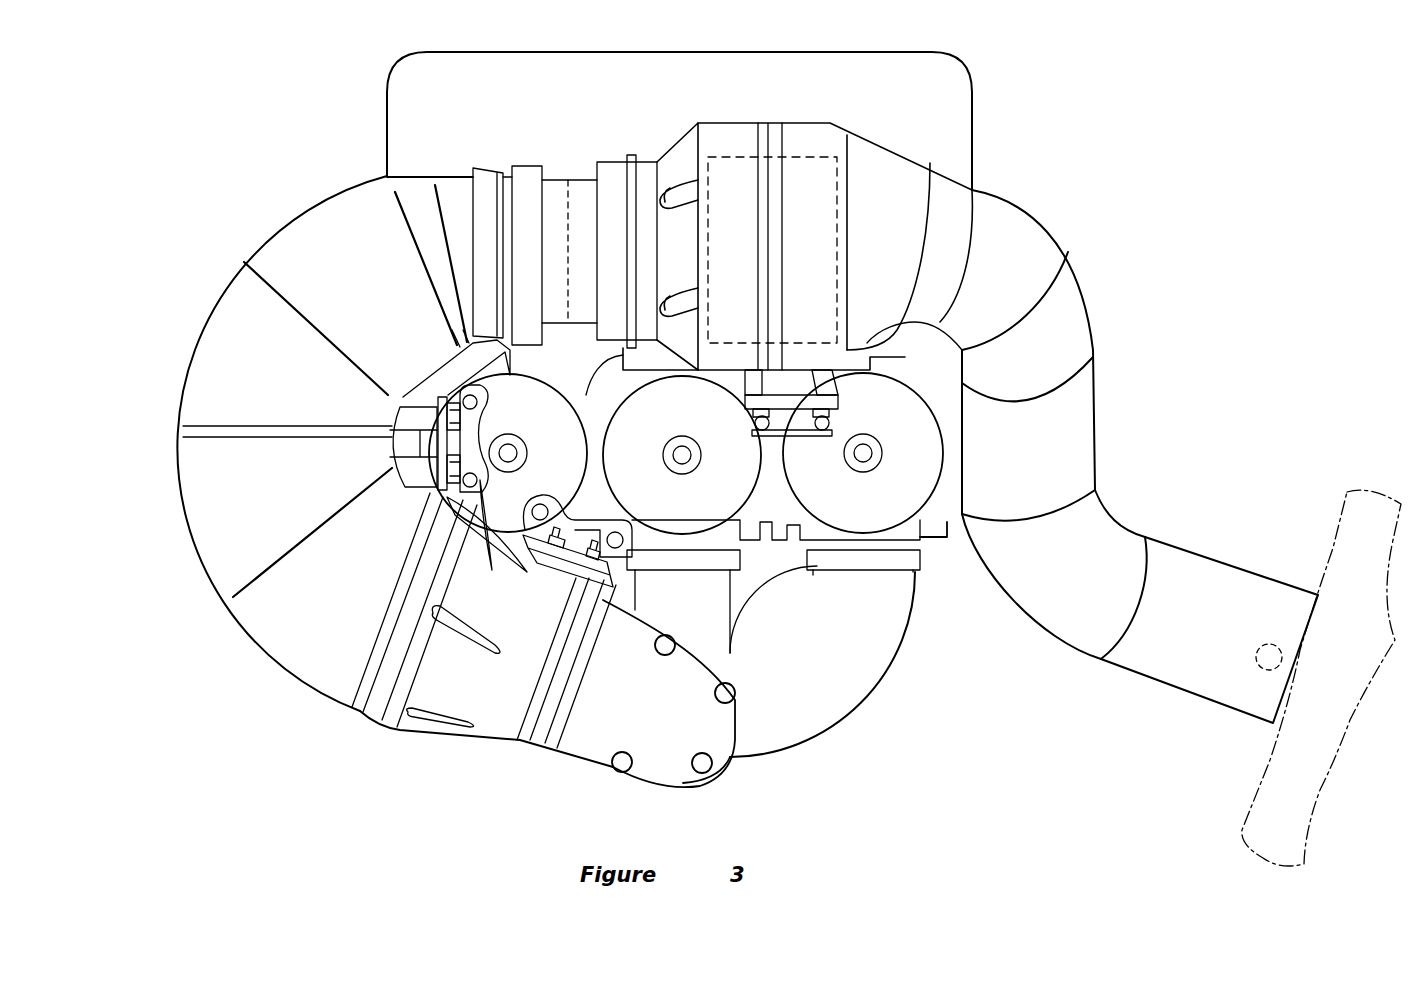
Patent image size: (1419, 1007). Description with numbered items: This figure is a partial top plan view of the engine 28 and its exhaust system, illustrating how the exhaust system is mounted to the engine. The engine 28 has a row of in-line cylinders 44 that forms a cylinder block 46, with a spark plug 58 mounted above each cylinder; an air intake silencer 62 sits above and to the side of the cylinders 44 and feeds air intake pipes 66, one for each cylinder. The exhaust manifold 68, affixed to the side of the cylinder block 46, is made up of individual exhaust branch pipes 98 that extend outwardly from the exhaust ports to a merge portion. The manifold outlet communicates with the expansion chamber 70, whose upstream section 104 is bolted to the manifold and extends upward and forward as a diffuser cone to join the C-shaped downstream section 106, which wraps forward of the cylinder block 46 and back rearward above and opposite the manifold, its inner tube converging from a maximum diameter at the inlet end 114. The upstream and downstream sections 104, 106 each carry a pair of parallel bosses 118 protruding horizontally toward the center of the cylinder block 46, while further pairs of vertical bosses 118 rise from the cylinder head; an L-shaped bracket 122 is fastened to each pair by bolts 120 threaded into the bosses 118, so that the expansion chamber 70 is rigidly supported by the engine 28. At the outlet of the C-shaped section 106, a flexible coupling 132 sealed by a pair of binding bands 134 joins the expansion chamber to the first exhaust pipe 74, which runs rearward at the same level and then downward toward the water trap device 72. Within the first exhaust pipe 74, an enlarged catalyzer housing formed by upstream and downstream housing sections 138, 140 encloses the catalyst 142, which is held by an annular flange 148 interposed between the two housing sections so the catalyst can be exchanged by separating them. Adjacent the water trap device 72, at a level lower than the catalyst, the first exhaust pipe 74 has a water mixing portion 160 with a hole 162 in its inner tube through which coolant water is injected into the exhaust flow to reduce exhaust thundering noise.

The engine 28 is at (819, 760).
The cylinders 44 is at (660, 512).
The cylinder block 46 is at (946, 550).
The spark plug 58 is at (515, 453).
The air intake silencer 62 is at (978, 120).
The air intake pipes 66 is at (613, 355).
The exhaust manifold 68 is at (842, 700).
The expansion chamber 70 is at (296, 712).
The water trap device 72 is at (1333, 545).
The first exhaust pipe 74 is at (1072, 252).
The exhaust branch pipes 98 is at (733, 613).
The upstream section 104 is at (567, 763).
The C-shaped downstream section 106 is at (193, 542).
The inlet end 114 is at (357, 708).
The bosses 118 is at (410, 400).
The bolt 120 is at (593, 520).
The L-shaped bracket 122 is at (478, 430).
The flexible coupling 132 is at (565, 170).
The binding bands 134 is at (512, 175).
The upstream housing section 138 is at (706, 122).
The downstream housing section 140 is at (818, 122).
The catalyst 142 is at (840, 195).
The annular flange 148 is at (770, 122).
The water mixing portion 160 is at (1277, 600).
The hole 162 is at (1262, 665).